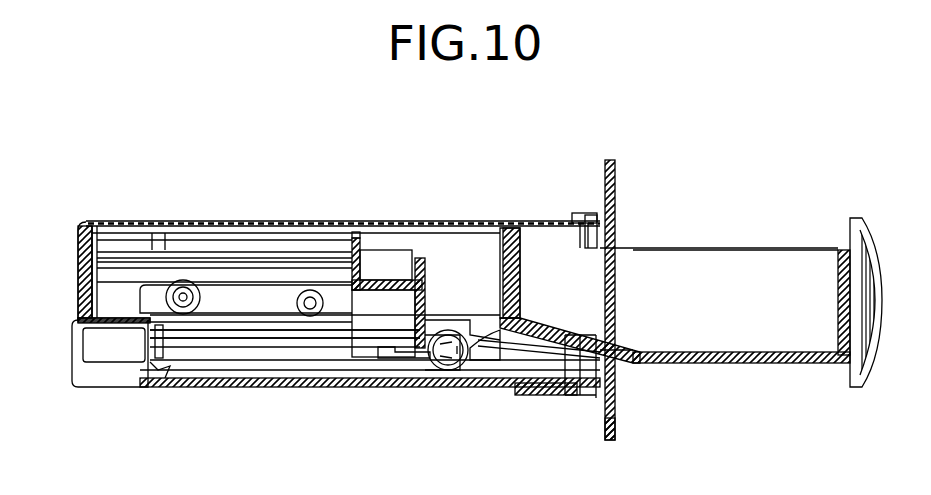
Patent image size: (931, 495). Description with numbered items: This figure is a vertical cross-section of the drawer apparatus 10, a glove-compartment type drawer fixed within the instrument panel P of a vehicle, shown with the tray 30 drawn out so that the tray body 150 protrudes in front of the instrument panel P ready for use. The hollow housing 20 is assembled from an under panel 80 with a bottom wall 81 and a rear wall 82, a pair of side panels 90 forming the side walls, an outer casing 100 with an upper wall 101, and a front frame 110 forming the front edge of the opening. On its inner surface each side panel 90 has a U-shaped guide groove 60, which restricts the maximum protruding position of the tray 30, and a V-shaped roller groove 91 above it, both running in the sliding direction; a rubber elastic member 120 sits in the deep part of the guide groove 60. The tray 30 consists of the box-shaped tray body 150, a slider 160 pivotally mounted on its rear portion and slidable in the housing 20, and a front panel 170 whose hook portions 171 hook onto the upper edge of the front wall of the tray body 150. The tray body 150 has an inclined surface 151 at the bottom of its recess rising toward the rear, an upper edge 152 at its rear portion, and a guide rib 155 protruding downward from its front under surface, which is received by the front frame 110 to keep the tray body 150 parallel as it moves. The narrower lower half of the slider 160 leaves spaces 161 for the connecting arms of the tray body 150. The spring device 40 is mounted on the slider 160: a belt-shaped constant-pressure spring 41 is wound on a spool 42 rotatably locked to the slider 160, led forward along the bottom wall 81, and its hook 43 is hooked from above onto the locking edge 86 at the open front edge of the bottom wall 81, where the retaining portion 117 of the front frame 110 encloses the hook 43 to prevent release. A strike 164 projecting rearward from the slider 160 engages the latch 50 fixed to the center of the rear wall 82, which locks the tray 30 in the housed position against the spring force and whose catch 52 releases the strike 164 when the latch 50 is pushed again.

The drawer apparatus 10 is at (258, 212).
The hollow housing 20 is at (298, 215).
The tray 30 is at (755, 232).
The spring device 40 is at (446, 370).
The constant-pressure spring 41 is at (500, 360).
The spool 42 is at (468, 370).
The hook 43 is at (590, 395).
The latch 50 is at (110, 368).
The catch 52 is at (162, 385).
The guide groove 60 is at (240, 333).
The under panel 80 is at (78, 322).
The bottom wall 81 is at (183, 387).
The rear wall 82 is at (80, 240).
The locking edge 86 is at (613, 432).
The side panel 90 is at (178, 240).
The roller groove 91 is at (230, 262).
The outer casing 100 is at (118, 222).
The upper wall 101 is at (195, 222).
The front frame 110 is at (578, 212).
The retaining portion 117 is at (537, 392).
The elastic member 120 is at (510, 225).
The tray body 150 is at (700, 262).
The inclined surface 151 is at (660, 358).
The upper edge 152 is at (500, 225).
The guide rib 155 is at (820, 368).
The slider 160 is at (355, 222).
The space 161 is at (357, 357).
The strike 164 is at (390, 358).
The front panel 170 is at (860, 220).
The hook portion 171 is at (832, 255).
The instrument panel P is at (615, 178).